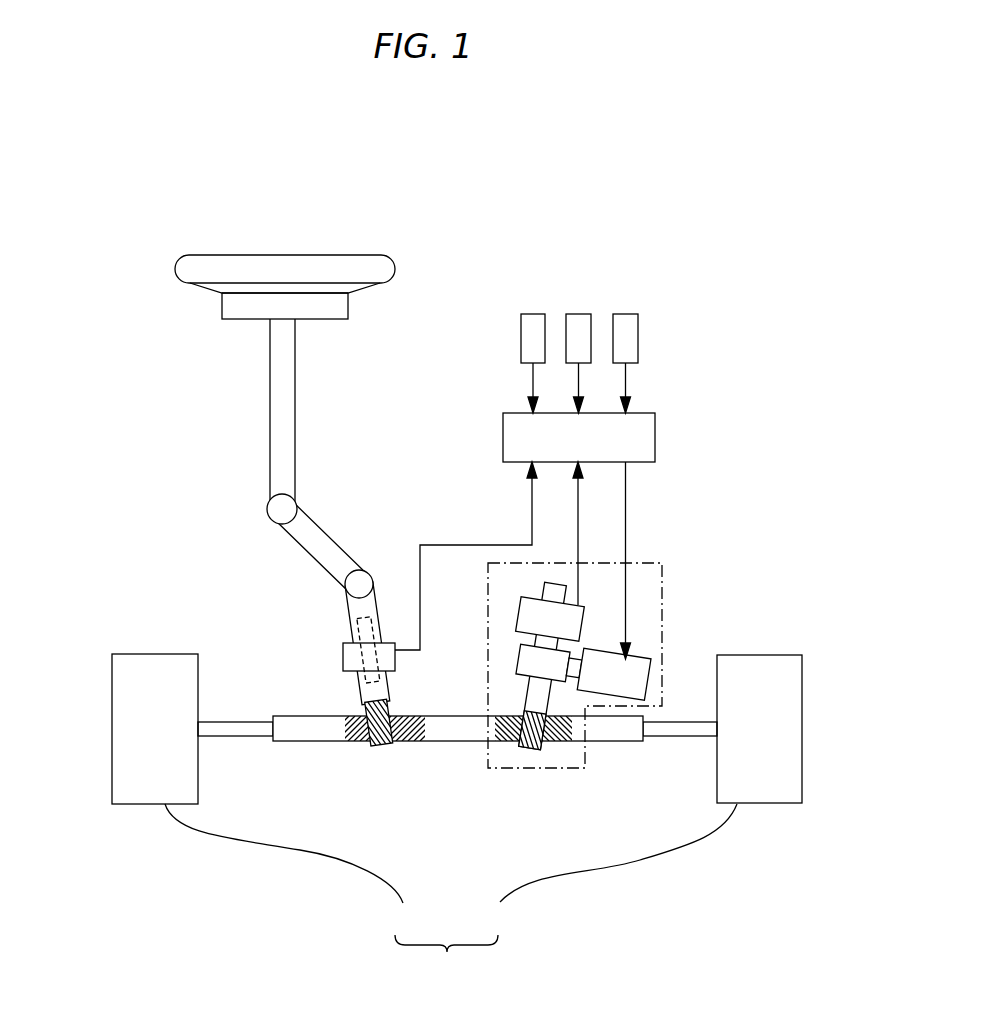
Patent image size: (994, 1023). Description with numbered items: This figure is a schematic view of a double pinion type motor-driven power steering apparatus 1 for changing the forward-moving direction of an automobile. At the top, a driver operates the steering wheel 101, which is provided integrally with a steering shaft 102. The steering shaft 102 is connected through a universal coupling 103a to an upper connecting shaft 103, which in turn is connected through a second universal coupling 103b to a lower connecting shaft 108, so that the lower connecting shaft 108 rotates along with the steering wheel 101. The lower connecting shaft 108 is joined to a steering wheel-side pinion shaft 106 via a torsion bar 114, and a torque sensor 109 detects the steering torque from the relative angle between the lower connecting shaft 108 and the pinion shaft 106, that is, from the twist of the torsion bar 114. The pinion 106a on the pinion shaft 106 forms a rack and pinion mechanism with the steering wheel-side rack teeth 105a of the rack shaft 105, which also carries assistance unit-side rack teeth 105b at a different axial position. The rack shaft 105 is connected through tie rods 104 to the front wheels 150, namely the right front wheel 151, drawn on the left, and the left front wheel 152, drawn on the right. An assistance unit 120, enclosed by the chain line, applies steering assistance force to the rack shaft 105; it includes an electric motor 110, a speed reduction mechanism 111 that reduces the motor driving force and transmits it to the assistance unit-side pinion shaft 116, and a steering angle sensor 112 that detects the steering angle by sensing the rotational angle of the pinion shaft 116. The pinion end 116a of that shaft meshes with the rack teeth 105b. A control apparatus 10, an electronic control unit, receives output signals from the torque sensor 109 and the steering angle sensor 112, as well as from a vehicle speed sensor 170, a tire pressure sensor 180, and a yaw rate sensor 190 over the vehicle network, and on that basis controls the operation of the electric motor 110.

The motor-driven power steering apparatus 1 is at (166, 397).
The control apparatus 10 is at (655, 441).
The steering wheel 101 is at (200, 255).
The steering shaft 102 is at (270, 470).
The upper connecting shaft 103 is at (313, 510).
The universal coupling 103a is at (268, 512).
The universal coupling 103b is at (345, 575).
The tie rod 104 is at (238, 718).
The rack shaft 105 is at (620, 742).
The steering wheel-side rack teeth 105a is at (402, 745).
The assistance unit-side rack 105b is at (555, 737).
The steering wheel-side pinion shaft 106 is at (340, 741).
The pinion 106a is at (383, 748).
The lower connecting shaft 108 is at (348, 612).
The torque sensor 109 is at (343, 660).
The electric motor 110 is at (633, 658).
The speed reduction mechanism 111 is at (517, 662).
The steering angle sensor 112 is at (518, 615).
The torsion bar 114 is at (360, 682).
The assistance unit-side pinion shaft 116 is at (522, 700).
The second pinion gear 116a is at (532, 748).
The assistance unit 120 is at (652, 565).
The front wheels 150 is at (446, 955).
The right front wheel 151 is at (270, 794).
The left front wheel 152 is at (630, 794).
The vehicle speed sensor 170 is at (533, 314).
The tire pressure sensor 180 is at (578, 314).
The yaw rate sensor 190 is at (626, 314).